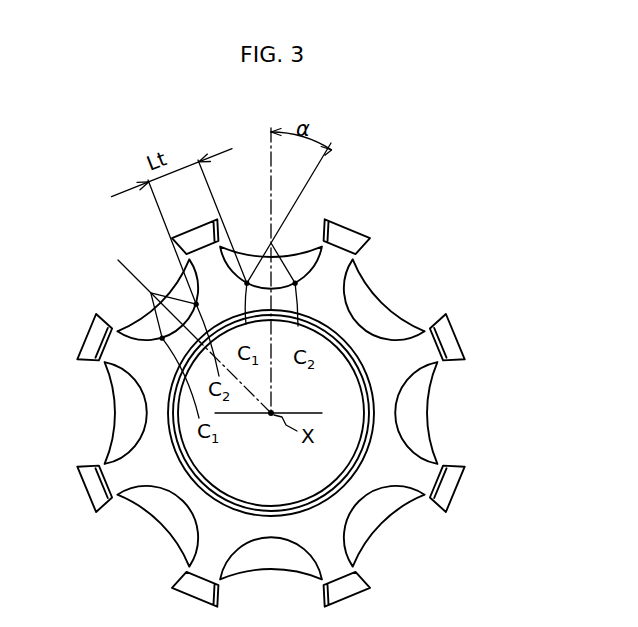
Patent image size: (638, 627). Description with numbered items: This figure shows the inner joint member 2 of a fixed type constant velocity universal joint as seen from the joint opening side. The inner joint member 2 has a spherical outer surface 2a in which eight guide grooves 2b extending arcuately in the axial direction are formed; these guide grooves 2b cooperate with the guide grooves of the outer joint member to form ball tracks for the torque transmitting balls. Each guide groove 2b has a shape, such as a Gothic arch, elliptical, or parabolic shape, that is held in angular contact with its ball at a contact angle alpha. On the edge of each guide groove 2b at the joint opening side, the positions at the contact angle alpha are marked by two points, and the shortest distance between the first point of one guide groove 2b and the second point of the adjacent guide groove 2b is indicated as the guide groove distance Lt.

The inner joint member 2 is at (302, 393).
The spherical outer surface 2a is at (343, 232).
The guide groove 2b is at (303, 247).